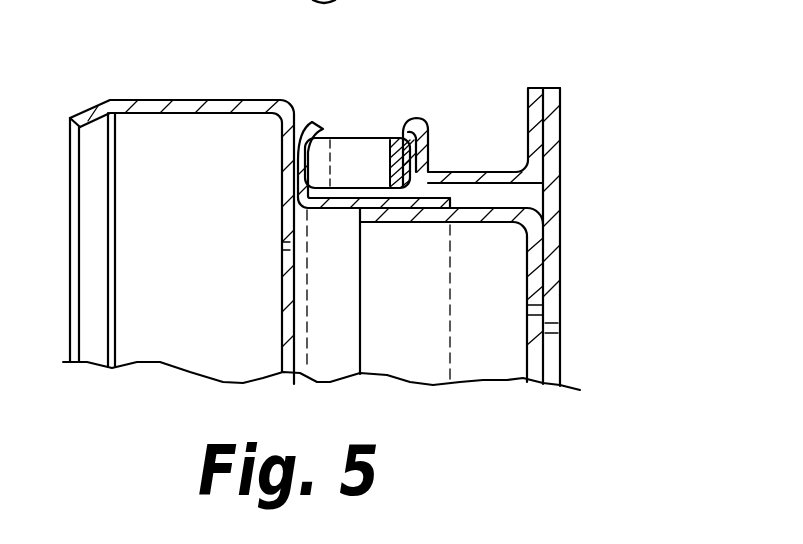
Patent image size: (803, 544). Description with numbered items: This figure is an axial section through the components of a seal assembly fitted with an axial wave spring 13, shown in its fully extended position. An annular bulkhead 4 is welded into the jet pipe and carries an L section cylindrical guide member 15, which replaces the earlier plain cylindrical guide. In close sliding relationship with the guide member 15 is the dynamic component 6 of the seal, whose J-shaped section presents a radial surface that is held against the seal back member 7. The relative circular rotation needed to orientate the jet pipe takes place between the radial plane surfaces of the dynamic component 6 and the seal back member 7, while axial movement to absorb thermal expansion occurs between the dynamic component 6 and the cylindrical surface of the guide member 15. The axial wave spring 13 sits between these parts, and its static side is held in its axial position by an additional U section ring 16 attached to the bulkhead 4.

The annular bulkhead 4 is at (557, 150).
The dynamic component 6 is at (340, 203).
The seal back member 7 is at (165, 103).
The axial wave spring 13 is at (368, 147).
The cylindrical guide member 15 is at (535, 270).
The U section ring 16 is at (535, 92).